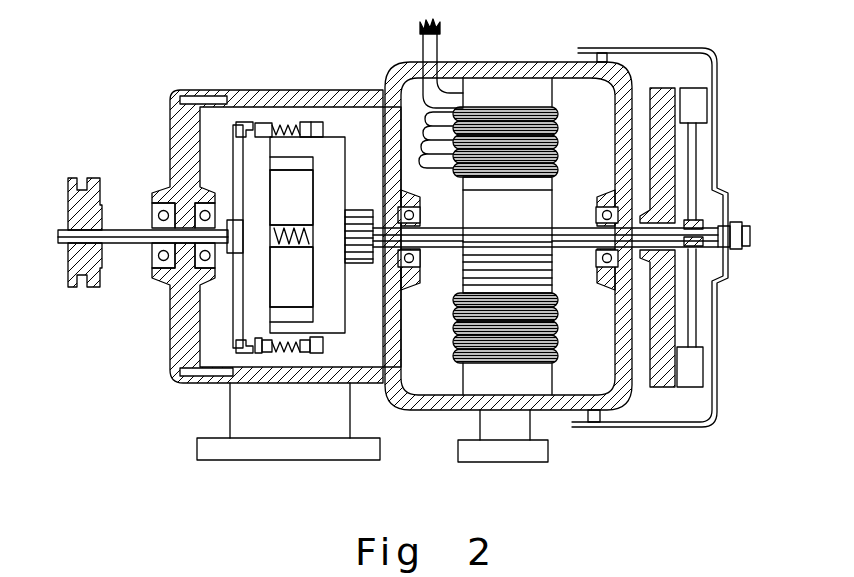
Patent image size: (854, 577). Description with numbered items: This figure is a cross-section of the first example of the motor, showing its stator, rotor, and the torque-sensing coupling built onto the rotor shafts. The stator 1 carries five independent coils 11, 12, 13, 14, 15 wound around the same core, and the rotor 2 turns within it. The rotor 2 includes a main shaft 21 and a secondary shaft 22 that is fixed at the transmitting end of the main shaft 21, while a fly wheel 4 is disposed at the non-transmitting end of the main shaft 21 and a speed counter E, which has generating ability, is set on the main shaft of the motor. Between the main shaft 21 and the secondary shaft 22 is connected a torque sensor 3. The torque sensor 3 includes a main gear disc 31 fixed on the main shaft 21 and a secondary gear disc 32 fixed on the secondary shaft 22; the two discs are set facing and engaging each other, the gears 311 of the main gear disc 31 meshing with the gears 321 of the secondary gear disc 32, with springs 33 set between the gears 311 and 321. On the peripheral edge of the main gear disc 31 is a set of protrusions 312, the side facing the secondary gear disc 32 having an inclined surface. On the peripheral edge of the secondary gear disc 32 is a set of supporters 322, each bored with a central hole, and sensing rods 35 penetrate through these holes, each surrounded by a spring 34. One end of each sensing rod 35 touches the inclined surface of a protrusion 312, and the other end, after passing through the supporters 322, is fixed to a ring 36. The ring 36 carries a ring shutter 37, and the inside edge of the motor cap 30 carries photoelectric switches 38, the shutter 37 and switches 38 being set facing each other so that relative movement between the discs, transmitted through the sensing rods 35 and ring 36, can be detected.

The stator 1 is at (507, 68).
The coil 11 is at (553, 176).
The coil 12 is at (558, 162).
The coil 13 is at (558, 140).
The coil 14 is at (560, 128).
The coil 15 is at (558, 113).
The rotor 2 is at (470, 212).
The main shaft 21 is at (576, 241).
The secondary shaft 22 is at (100, 232).
The torque sensor 3 is at (232, 160).
The motor cap 30 is at (175, 112).
The main gear disc 31 is at (333, 311).
The gears of main gear disc 311 is at (278, 258).
The protrusions 312 is at (316, 124).
The secondary gear disc 32 is at (250, 243).
The gears of secondary gear disc 321 is at (292, 203).
The supporters 322 is at (258, 354).
The springs 33 is at (312, 232).
The spring 34 is at (289, 128).
The sensing rods 35 is at (307, 353).
The ring 36 is at (260, 125).
The ring shutter 37 is at (247, 123).
The photoelectric switches 38 is at (234, 118).
The fly wheel 4 is at (667, 92).
The speed counter E is at (745, 229).